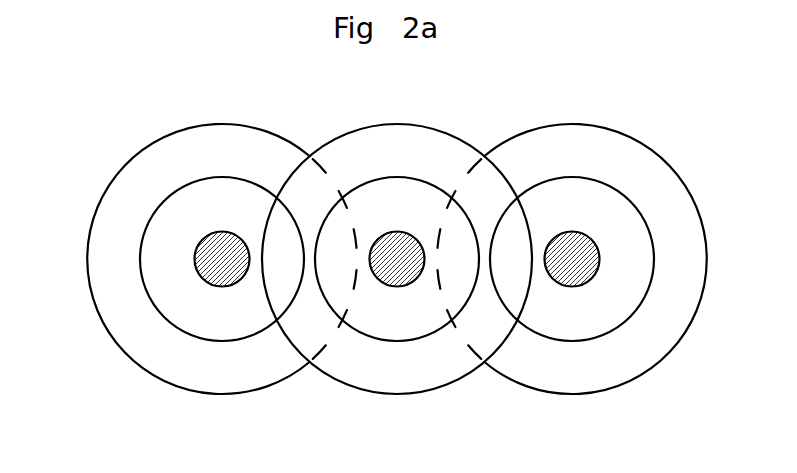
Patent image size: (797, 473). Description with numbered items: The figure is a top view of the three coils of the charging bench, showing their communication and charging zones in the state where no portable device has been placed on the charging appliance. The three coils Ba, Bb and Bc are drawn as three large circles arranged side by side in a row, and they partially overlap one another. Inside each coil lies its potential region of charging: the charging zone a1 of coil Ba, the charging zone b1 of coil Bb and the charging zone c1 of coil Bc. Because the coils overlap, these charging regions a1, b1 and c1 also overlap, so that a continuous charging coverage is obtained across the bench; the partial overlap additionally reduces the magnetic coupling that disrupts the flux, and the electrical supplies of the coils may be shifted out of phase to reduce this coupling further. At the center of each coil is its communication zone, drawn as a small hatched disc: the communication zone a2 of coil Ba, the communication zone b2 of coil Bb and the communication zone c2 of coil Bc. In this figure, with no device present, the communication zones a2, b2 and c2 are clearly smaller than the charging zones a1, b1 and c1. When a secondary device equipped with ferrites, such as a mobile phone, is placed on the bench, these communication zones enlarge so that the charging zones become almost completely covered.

The coil Ba is at (223, 124).
The coil Bb is at (398, 124).
The coil Bc is at (573, 124).
The potential region of charging a1 is at (208, 341).
The potential region of charging b1 is at (397, 341).
The potential region of charging c1 is at (572, 341).
The communication zone a2 is at (222, 260).
The communication zone b2 is at (395, 258).
The communication zone c2 is at (572, 259).